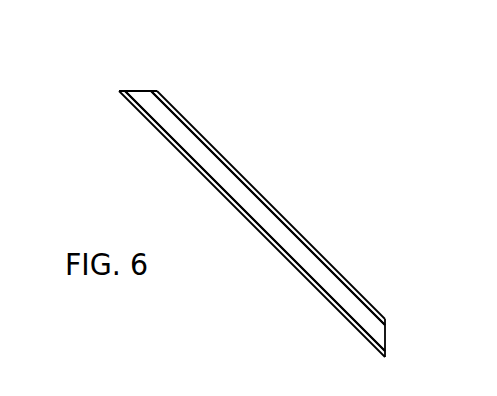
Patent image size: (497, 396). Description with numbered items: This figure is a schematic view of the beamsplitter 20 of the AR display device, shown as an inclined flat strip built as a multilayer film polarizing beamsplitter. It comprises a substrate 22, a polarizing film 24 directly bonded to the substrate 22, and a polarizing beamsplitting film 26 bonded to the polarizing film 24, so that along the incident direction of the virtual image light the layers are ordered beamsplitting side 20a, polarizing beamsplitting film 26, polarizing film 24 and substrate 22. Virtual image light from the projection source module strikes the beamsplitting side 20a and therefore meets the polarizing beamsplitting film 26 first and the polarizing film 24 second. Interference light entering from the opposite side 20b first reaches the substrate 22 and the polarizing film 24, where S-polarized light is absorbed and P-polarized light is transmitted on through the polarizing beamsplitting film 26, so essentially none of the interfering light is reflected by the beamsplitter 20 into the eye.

The beamsplitter 20 is at (104, 88).
The beamsplitting side 20a is at (240, 175).
The side of the beamsplitter 20b is at (225, 199).
The substrate 22 is at (139, 107).
The polarizing film 24 is at (197, 148).
The polarizing beamsplitting film 26 is at (292, 228).